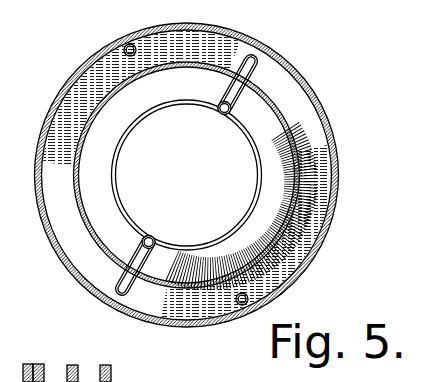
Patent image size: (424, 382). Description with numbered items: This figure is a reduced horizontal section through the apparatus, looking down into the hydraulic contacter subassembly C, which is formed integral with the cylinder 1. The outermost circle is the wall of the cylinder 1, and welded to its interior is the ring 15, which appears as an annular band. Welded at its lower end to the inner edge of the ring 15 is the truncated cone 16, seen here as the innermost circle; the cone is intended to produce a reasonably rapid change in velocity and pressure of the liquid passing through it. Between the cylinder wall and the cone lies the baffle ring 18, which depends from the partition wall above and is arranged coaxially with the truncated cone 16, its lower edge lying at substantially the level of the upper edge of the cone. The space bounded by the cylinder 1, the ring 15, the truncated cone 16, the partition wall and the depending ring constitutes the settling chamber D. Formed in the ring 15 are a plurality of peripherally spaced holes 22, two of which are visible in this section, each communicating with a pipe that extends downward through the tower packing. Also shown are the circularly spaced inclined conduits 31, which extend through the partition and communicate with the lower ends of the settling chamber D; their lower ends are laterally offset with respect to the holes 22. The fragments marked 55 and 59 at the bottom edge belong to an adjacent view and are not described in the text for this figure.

The cylinder 1 is at (55, 101).
The ring 15 is at (92, 80).
The truncated cone 16 is at (153, 116).
The baffle ring 18 is at (80, 221).
The holes 22 is at (128, 44).
The inclined conduits 31 is at (254, 62).
The hydraulic contacter subassembly C is at (184, 180).
The settling chamber D is at (82, 264).
The element 55 is at (33, 366).
The element 59 is at (83, 381).